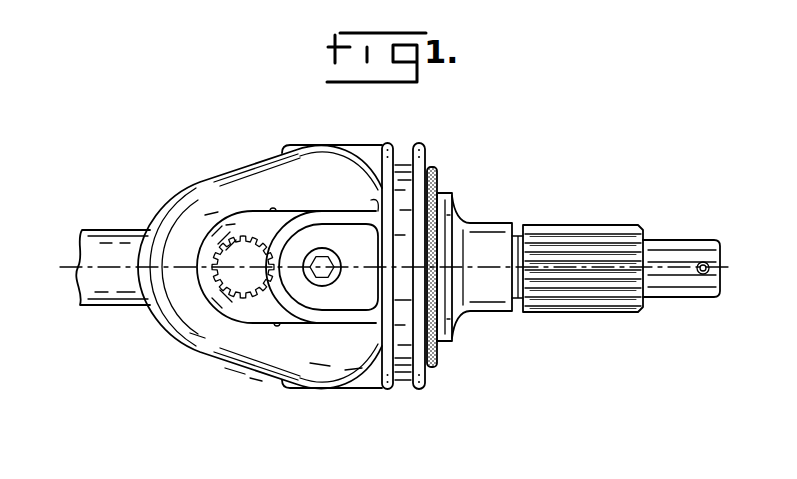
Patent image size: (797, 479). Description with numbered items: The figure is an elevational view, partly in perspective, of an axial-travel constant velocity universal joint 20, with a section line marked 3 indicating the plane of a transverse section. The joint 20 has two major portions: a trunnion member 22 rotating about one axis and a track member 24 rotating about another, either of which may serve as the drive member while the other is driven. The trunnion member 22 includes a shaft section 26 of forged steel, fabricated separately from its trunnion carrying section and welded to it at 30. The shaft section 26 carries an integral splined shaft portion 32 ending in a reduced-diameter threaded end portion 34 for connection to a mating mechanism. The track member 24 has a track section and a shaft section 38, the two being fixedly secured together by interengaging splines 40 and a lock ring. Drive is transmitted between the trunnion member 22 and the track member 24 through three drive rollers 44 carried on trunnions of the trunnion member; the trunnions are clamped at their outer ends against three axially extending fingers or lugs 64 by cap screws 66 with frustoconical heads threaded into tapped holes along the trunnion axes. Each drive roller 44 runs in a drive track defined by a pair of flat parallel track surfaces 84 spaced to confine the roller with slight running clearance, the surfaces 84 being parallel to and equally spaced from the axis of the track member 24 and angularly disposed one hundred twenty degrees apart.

The constant velocity universal joint 20 is at (413, 110).
The trunnion member 22 is at (436, 131).
The track member 24 is at (208, 172).
The shaft section 26 is at (472, 222).
The weld 30 is at (433, 365).
The splined shaft portion 32 is at (600, 228).
The threaded end portion 34 is at (672, 240).
The shaft section 38 is at (110, 303).
The interengaging splines 40 is at (237, 284).
The drive rollers 44 is at (326, 202).
The fingers or lugs 64 is at (347, 388).
The cap screws 66 is at (331, 259).
The track surfaces 84 is at (275, 211).
The section line 3- 3 is at (487, 244).